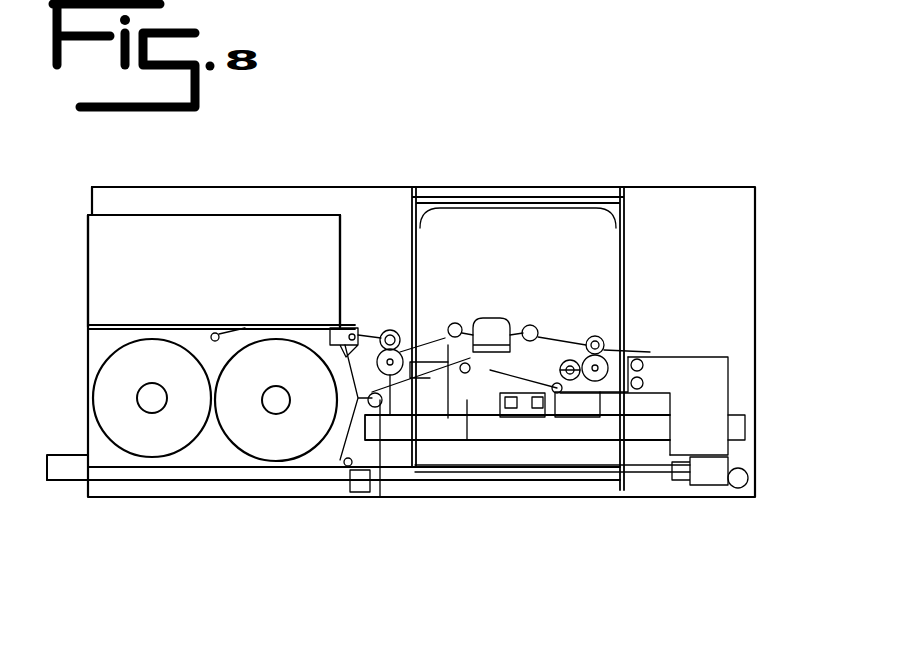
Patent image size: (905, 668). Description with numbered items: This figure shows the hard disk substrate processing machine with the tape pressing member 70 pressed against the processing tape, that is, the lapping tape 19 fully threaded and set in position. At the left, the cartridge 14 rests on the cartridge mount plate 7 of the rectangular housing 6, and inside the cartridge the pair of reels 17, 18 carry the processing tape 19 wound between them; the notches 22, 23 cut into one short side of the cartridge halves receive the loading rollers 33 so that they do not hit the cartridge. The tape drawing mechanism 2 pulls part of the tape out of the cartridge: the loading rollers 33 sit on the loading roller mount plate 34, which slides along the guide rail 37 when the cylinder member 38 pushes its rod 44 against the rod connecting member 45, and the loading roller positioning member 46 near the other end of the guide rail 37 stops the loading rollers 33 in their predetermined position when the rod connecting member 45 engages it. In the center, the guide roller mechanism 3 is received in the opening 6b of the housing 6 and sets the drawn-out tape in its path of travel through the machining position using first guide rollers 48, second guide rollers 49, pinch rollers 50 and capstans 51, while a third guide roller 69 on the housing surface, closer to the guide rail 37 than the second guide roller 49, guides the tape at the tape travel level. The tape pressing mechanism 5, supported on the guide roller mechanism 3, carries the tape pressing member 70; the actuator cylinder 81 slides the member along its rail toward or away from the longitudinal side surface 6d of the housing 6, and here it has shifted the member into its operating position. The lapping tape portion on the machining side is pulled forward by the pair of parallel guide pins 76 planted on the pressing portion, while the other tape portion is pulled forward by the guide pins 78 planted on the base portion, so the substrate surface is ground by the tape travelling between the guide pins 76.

The tape drawing mechanism 2 is at (712, 375).
The guide roller mechanism 3 is at (598, 210).
The tape pressing mechanism 5 is at (468, 460).
The housing 6 is at (97, 200).
The opening 6b is at (453, 325).
The longitudinal side surface 6d is at (542, 465).
The cartridge mount plate 7 is at (93, 258).
The cartridge 14 is at (93, 343).
The reel 17 is at (137, 447).
The reel 18 is at (262, 447).
The processing tape 19 is at (325, 462).
The notch 22 is at (338, 330).
The notch 23 is at (365, 337).
The loading rollers 33 is at (645, 383).
The loading roller mount plate 34 is at (712, 400).
The guide rail 37 is at (645, 430).
The cylinder member 38 is at (60, 463).
The rod 44 is at (412, 476).
The rod connecting member 45 is at (705, 472).
The loading roller positioning member 46 is at (738, 488).
The first guide rollers 48 is at (477, 325).
The second guide rollers 49 is at (556, 395).
The pinch rollers 50 is at (375, 325).
The capstans 51 is at (397, 325).
The third guide roller 69 is at (378, 466).
The tape pressing member 70 is at (498, 320).
The guide pins 76 is at (500, 325).
The guide pins 78 is at (462, 375).
The actuator cylinder 81 is at (520, 458).